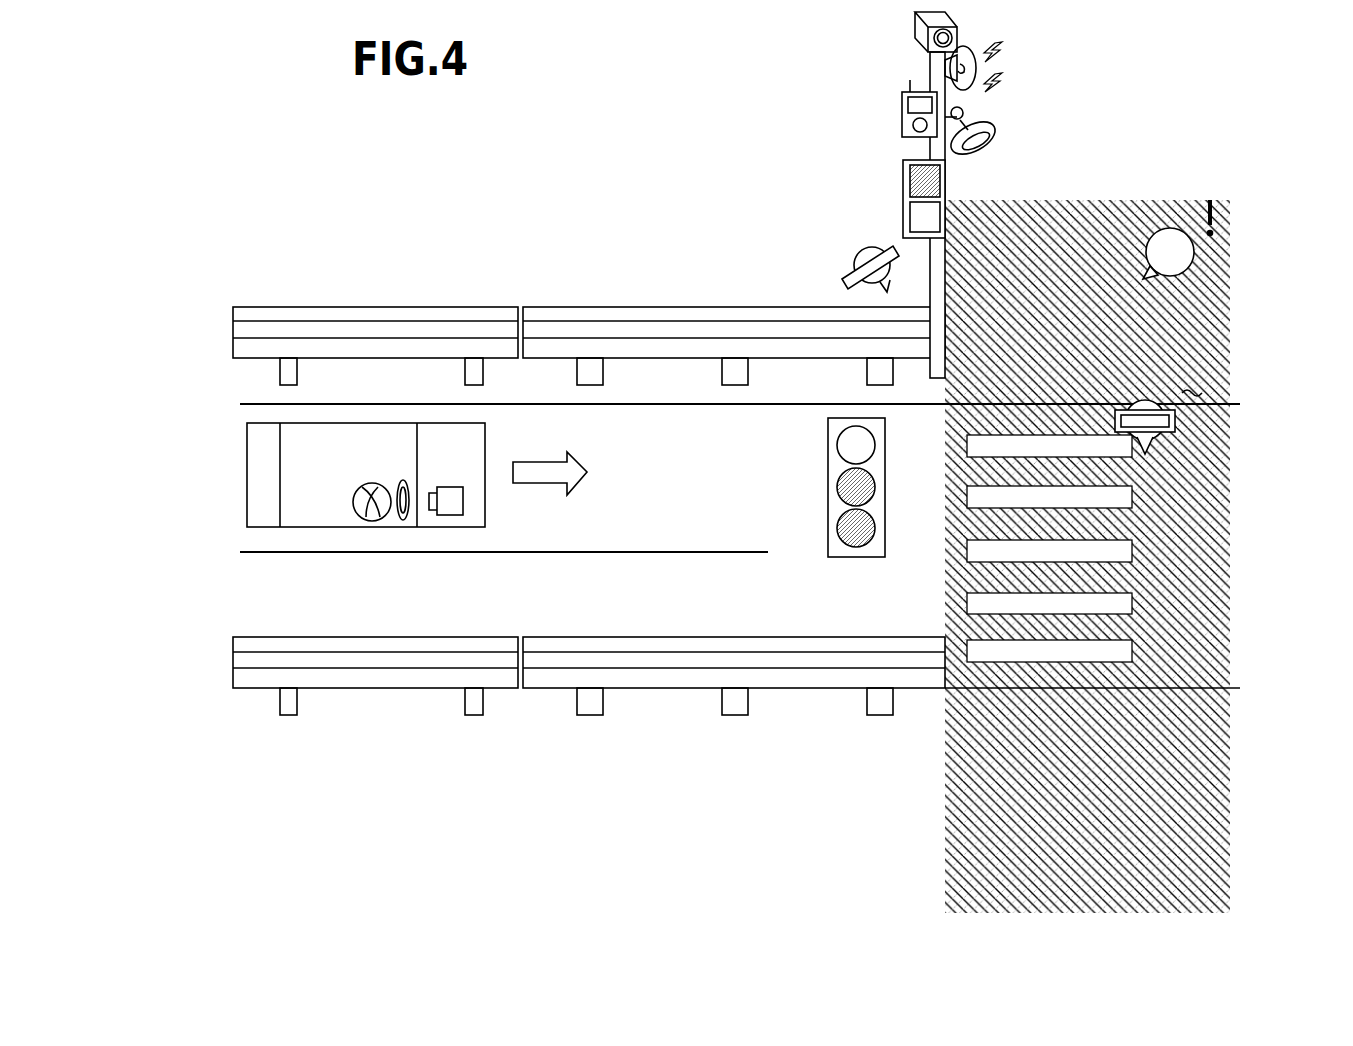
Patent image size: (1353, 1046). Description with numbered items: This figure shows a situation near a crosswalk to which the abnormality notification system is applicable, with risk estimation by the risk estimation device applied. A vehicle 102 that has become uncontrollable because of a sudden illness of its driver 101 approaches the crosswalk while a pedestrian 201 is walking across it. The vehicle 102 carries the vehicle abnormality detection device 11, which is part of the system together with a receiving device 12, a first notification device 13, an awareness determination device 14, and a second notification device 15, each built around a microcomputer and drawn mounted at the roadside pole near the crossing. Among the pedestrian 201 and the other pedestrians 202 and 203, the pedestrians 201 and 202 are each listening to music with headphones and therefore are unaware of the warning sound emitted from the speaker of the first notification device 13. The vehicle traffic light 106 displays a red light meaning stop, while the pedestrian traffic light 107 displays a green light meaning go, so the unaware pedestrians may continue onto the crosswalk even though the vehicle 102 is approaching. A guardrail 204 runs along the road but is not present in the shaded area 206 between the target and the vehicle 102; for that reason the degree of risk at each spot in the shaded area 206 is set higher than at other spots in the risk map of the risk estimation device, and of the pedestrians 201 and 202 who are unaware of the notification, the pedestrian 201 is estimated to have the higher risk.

The vehicle abnormality detection device 11 is at (448, 515).
The receiving device 12 is at (902, 100).
The first notification device 13 is at (976, 49).
The awareness determination device 14 is at (915, 28).
The second notification device 15 is at (978, 125).
The driver 101 is at (368, 512).
The vehicle 102 is at (487, 515).
The vehicle traffic light 106 is at (853, 557).
The pedestrian traffic light 107 is at (903, 159).
The pedestrian 201 is at (1180, 415).
The pedestrian 202 is at (846, 265).
The pedestrian 203 is at (1196, 250).
The guardrail 204 is at (591, 305).
The shaded area 206 is at (1076, 200).